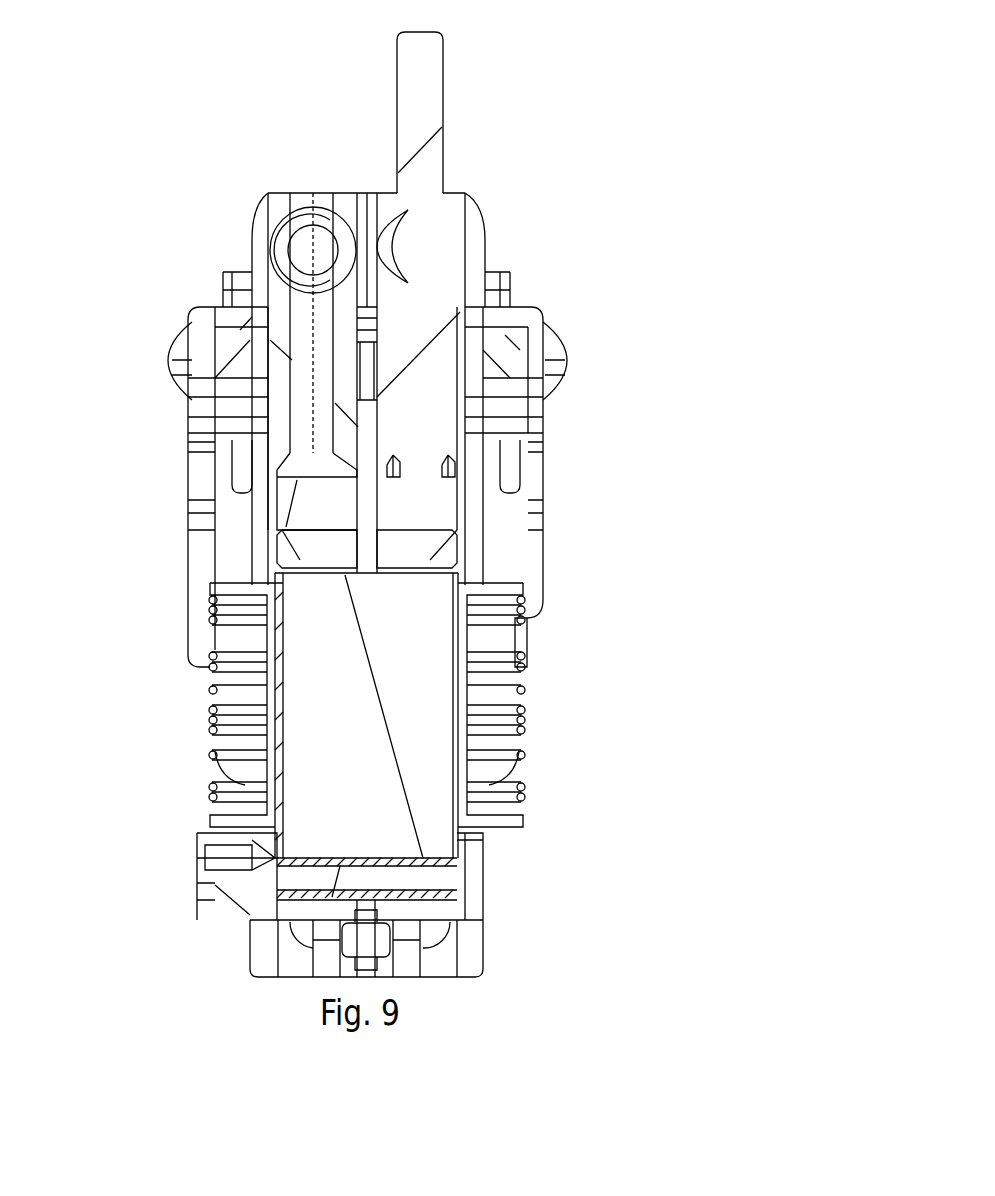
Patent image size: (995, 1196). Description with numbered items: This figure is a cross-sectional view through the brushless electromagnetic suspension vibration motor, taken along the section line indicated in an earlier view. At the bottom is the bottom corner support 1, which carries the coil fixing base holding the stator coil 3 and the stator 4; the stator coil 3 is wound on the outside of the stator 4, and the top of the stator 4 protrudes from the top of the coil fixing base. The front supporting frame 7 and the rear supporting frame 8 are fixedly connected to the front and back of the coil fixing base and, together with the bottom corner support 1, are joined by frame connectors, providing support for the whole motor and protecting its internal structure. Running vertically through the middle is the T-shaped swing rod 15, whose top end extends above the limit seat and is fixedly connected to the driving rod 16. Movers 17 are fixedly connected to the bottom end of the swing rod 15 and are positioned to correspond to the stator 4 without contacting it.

The driving rod 16 is at (479, 88).
The swing rod 15 is at (452, 263).
The rear supporting frame 8 is at (582, 397).
The front supporting frame 7 is at (161, 450).
The mover 17 is at (352, 545).
The stator 4 is at (318, 717).
The stator coil 3 is at (504, 705).
The bottom corner support 1 is at (501, 875).